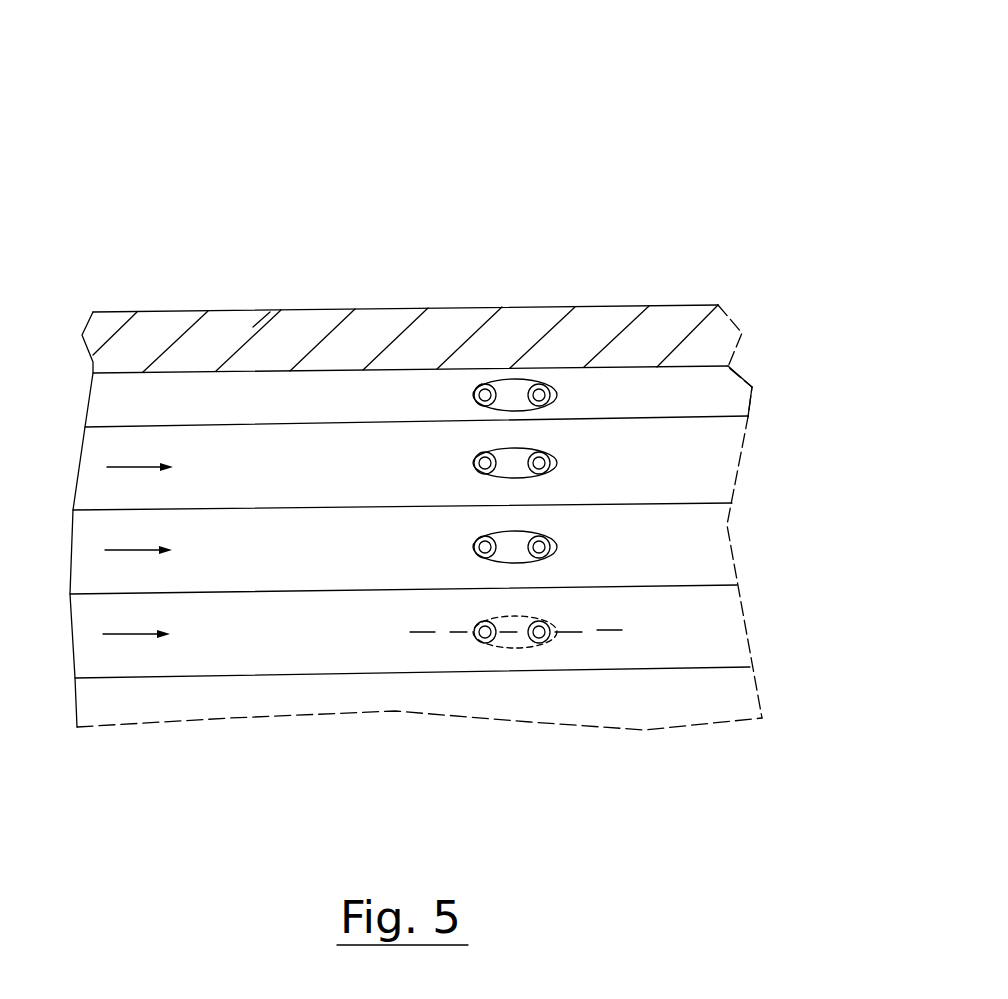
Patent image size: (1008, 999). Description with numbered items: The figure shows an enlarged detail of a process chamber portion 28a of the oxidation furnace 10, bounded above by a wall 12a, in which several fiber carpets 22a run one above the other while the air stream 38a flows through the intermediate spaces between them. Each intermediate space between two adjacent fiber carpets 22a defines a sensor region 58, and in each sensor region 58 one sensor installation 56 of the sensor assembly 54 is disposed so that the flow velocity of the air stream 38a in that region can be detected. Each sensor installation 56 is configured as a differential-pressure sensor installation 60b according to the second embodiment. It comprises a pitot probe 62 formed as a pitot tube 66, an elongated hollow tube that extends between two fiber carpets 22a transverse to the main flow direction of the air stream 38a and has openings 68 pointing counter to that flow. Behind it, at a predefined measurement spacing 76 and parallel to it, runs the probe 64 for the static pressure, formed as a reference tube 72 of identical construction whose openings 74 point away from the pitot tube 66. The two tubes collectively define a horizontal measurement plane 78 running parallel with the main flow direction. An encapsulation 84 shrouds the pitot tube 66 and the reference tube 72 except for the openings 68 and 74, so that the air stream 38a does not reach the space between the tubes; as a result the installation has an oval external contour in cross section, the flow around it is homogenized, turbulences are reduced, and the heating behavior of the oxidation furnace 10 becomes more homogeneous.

The oxidation furnace 10 is at (624, 103).
The plate 12a is at (273, 310).
The fiber carpets 22a is at (264, 428).
The process chamber portion 28a is at (210, 394).
The air stream 38a is at (136, 652).
The sensor assembly 54 is at (520, 334).
The sensor installation 56 is at (582, 391).
The sensor region 58 is at (482, 426).
The differential-pressure sensor installation 60b is at (748, 406).
The pitot probe 62 is at (458, 382).
The probe for the static pressure 64 is at (566, 444).
The pitot tube 66 is at (475, 404).
The openings 68 is at (472, 400).
The reference tube 72 is at (547, 469).
The openings 74 is at (552, 463).
The measurement spacing 76 is at (543, 572).
The measurement plane 78 is at (604, 633).
The encapsulation 84 is at (576, 374).